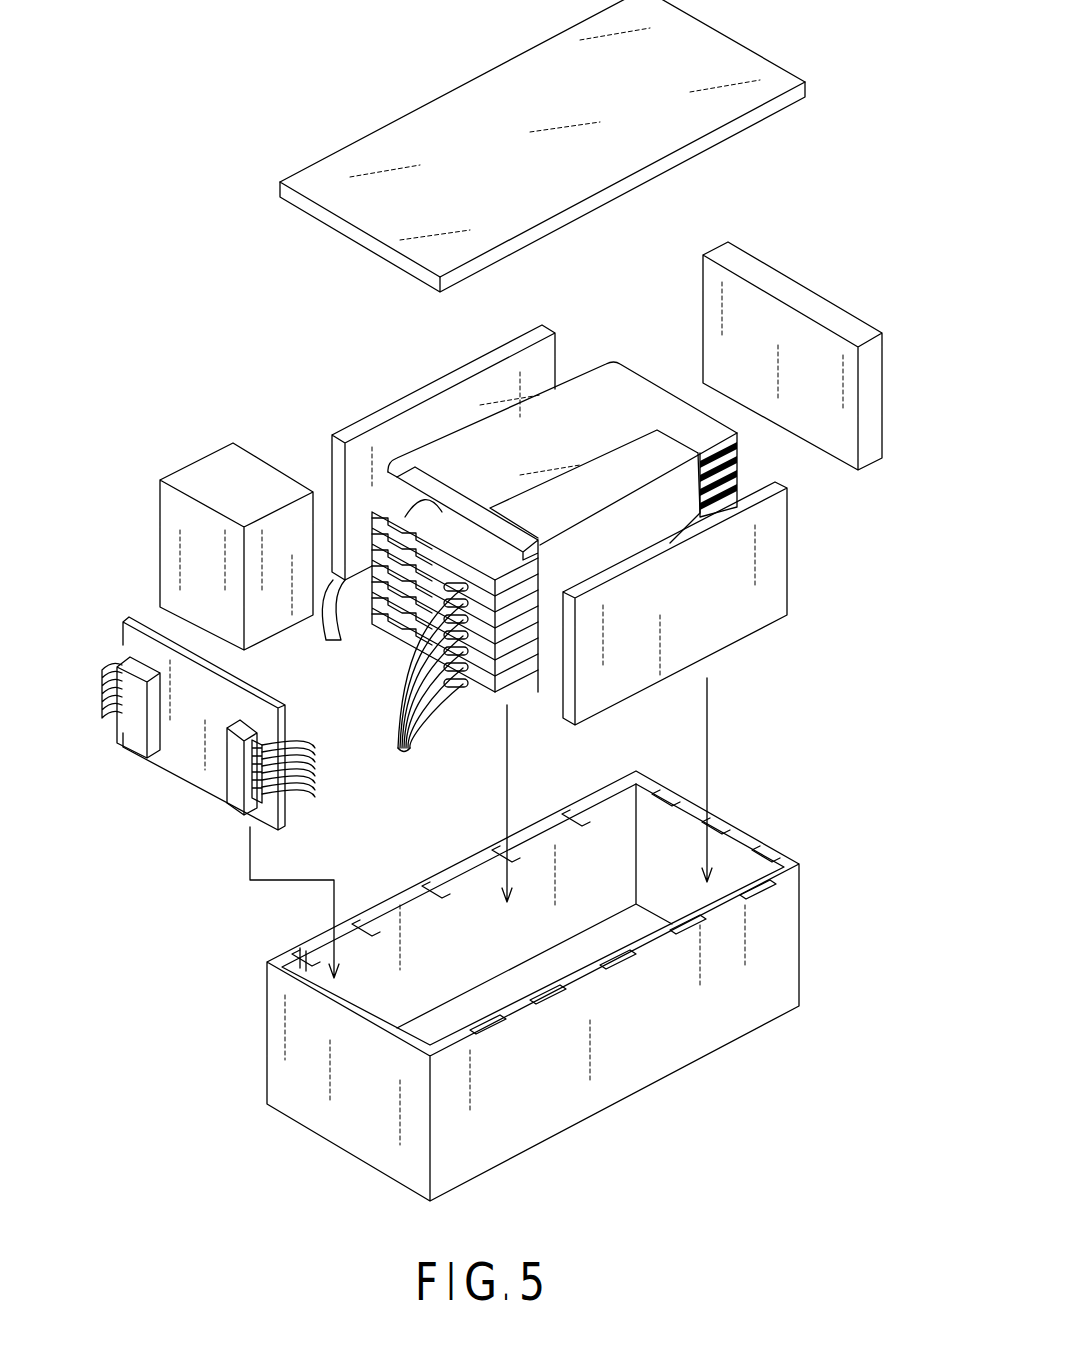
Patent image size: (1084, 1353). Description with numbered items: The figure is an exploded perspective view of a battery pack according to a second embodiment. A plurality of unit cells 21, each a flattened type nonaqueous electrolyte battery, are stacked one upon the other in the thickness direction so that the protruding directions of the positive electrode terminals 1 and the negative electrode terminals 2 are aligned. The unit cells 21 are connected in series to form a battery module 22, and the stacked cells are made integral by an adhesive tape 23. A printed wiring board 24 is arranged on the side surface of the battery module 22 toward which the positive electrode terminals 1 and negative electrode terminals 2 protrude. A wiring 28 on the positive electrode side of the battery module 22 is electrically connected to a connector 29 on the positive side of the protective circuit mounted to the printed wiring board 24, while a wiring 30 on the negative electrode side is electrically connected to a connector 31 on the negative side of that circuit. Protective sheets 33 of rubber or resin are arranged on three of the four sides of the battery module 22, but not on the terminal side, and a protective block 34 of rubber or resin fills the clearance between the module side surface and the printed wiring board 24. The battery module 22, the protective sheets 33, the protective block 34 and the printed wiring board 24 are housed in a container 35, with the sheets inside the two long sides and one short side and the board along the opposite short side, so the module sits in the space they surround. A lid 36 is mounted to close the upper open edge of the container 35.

The positive electrode terminal 1 is at (423, 575).
The negative electrode terminal 2 is at (405, 517).
The unit cell 21 is at (740, 484).
The battery module 22 is at (485, 410).
The adhesive tape 23 is at (656, 440).
The printed wiring board 24 is at (180, 760).
The wiring 28 is at (387, 750).
The connector 29 is at (233, 780).
The wiring 30 is at (120, 717).
The connector 31 is at (96, 727).
The protective sheet 33 is at (395, 410).
The protective block 34 is at (208, 465).
The container 35 is at (790, 953).
The lid 36 is at (730, 62).